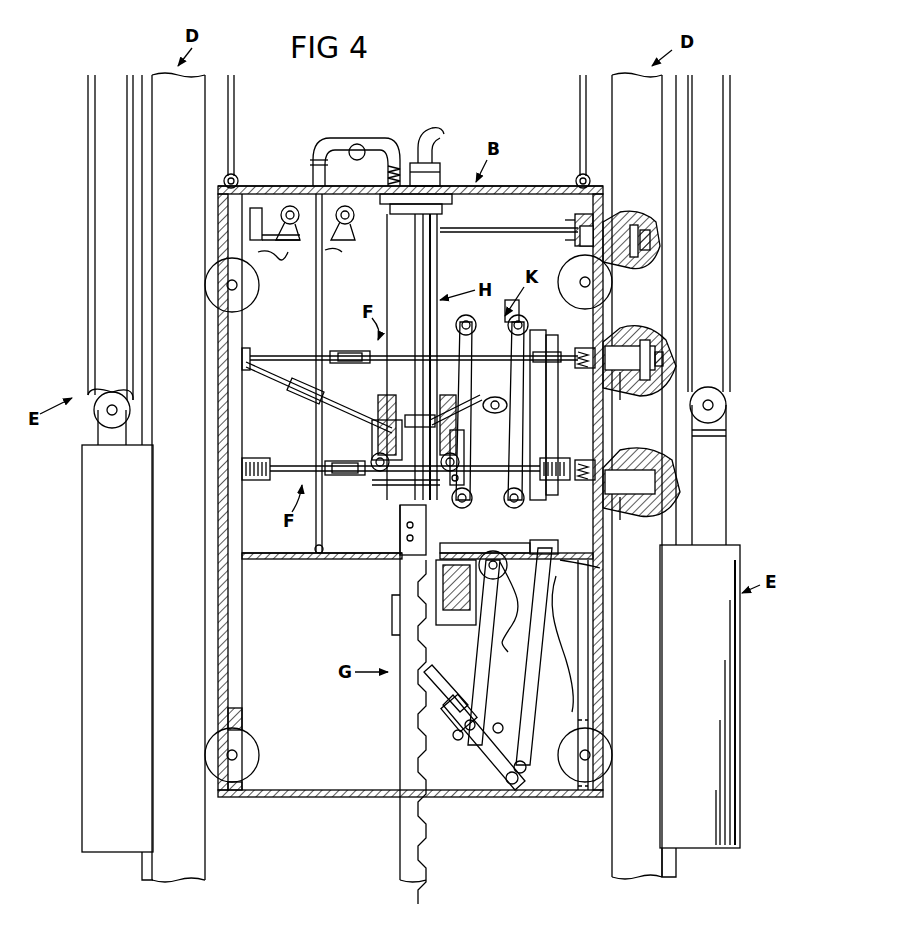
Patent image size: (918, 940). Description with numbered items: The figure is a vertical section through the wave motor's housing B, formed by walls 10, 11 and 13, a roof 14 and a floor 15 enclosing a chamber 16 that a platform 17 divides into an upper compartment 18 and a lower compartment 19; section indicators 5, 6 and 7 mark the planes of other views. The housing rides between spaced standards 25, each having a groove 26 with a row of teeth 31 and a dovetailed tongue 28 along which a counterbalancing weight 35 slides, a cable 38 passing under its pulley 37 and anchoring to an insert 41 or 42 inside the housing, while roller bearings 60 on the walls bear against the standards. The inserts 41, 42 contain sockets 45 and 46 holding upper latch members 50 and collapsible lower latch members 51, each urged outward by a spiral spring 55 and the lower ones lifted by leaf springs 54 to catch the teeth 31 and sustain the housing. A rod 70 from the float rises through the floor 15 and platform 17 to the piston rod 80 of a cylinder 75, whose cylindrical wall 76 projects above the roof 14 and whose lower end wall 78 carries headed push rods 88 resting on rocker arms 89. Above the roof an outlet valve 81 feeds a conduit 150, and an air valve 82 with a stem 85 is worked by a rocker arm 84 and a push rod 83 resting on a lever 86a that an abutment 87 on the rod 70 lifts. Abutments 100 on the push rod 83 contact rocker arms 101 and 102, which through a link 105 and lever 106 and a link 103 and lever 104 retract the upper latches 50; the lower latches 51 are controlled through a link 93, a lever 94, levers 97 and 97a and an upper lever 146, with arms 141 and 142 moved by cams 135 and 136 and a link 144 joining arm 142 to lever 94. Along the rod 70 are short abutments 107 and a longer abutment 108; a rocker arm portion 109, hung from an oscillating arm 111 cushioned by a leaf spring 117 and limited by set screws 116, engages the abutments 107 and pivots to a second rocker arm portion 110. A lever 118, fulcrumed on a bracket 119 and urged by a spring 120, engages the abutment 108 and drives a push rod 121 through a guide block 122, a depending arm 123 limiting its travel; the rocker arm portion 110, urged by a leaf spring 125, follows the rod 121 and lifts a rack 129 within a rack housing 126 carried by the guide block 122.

The section line 5- 5 is at (755, 213).
The section line 6- 6 is at (453, 505).
The section line 7- 7 is at (292, 755).
The wall 10 is at (218, 543).
The wall 11 is at (604, 688).
The wall 13 is at (500, 200).
The upper wall or roof 14 is at (528, 192).
The lower wall or floor 15 is at (252, 797).
The chamber 16 is at (350, 775).
The support or platform 17 is at (325, 562).
The upper compartment 18 is at (252, 198).
The lower compartment 19 is at (372, 778).
The standard 25 is at (188, 82).
The longitudinally extending groove 26 is at (610, 116).
The dovetailed tongue 28 is at (146, 870).
The teeth 31 is at (650, 346).
The weight 35 is at (92, 572).
The pulley 37 is at (92, 416).
The cable 38 is at (128, 352).
The insert 41 is at (238, 586).
The insert 42 is at (585, 622).
The socket 45 is at (640, 238).
The socket 46 is at (660, 362).
The latch member 50 is at (640, 210).
The latch member 51 is at (742, 476).
The leaf spring 54 is at (655, 392).
The clamp block 55 is at (592, 226).
The roller bearings 60 is at (240, 285).
The rod 70 is at (412, 860).
The cylinder 75 is at (390, 276).
The cylindrical wall 76 is at (400, 296).
The lower end wall 78 is at (372, 434).
The piston rod 80 is at (405, 496).
The outlet valve 81 is at (444, 160).
The air intake and release valve 82 is at (382, 176).
The push rod 83 is at (322, 326).
The rocker arm 84 is at (350, 140).
The valve stem 85 is at (390, 160).
The lever 86a is at (356, 553).
The abutment 87 is at (392, 620).
The push rods 88 is at (440, 424).
The rocker arms 89 is at (450, 478).
The link 93 is at (262, 380).
The lever 94 is at (246, 350).
The lever 97 is at (555, 458).
The lever 97a is at (255, 480).
The abutment 100 is at (347, 248).
The rocker arm 101 is at (361, 223).
The rocker arm 102 is at (279, 263).
The link 103 is at (272, 245).
The lever 104 is at (270, 223).
The link 105 is at (486, 236).
The lever 106 is at (572, 240).
The abutments 107 is at (410, 632).
The longer abutment 108 is at (420, 565).
The rocker arm portion 109 is at (478, 770).
The second rocker arm portion 110 is at (520, 680).
The oscillating bracket or arm 111 is at (478, 676).
The set screws 116 is at (460, 670).
The leaf spring 117 is at (519, 607).
The lever 118 is at (408, 553).
The bracket 119 is at (494, 648).
The expansion spiral spring 120 is at (452, 592).
The push rod 121 is at (480, 548).
The guide block 122 is at (600, 568).
The depending arm 123 is at (590, 552).
The leaf spring 125 is at (575, 608).
The rack housing 126 is at (530, 386).
The rack 129 is at (510, 555).
The cam 135 is at (530, 410).
The cam 136 is at (470, 408).
The arm 141 is at (478, 358).
The arm 142 is at (502, 465).
The link 144 is at (296, 357).
The upper lever 146 is at (578, 350).
The conduit 150 is at (428, 132).